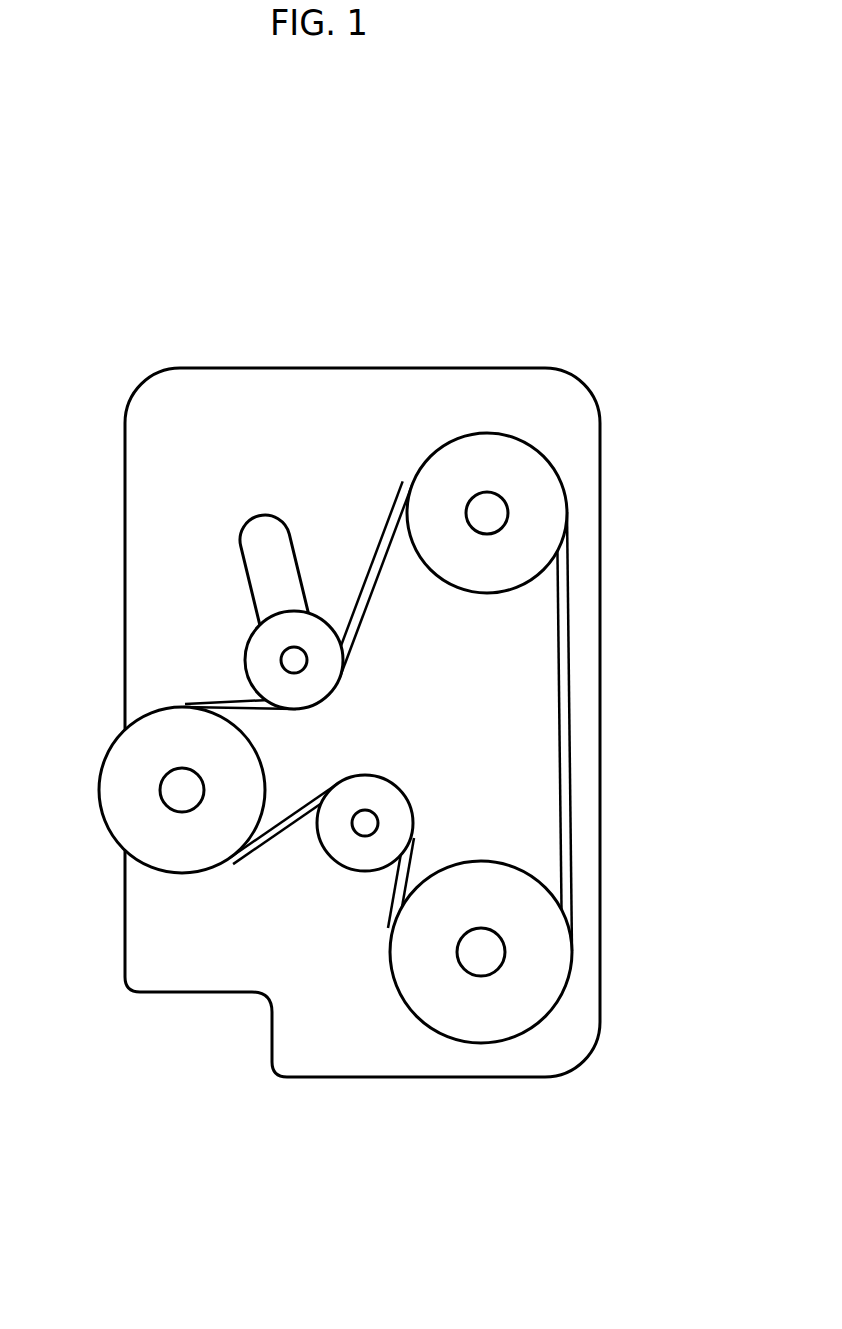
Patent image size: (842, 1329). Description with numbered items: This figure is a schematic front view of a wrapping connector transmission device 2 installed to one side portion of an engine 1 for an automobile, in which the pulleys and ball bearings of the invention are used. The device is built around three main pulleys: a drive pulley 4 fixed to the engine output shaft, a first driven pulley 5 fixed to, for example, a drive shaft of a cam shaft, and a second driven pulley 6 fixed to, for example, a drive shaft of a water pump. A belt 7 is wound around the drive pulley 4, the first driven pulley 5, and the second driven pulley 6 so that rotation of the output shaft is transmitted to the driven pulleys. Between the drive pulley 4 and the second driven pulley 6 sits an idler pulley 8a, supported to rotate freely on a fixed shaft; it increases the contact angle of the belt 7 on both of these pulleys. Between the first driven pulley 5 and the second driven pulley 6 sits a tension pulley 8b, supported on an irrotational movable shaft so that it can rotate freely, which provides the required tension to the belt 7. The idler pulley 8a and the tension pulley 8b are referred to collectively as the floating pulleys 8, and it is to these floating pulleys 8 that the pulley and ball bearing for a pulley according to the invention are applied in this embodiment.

The engine 1 is at (613, 353).
The wrapping connector transmission device 2 is at (184, 659).
The drive pulley 4 is at (486, 1025).
The first driven pulley 5 is at (545, 483).
The second driven pulley 6 is at (118, 796).
The belt 7 is at (570, 697).
The floating pulleys 8 is at (367, 693).
The idler pulley 8a is at (375, 790).
The tension pulley 8b is at (317, 678).